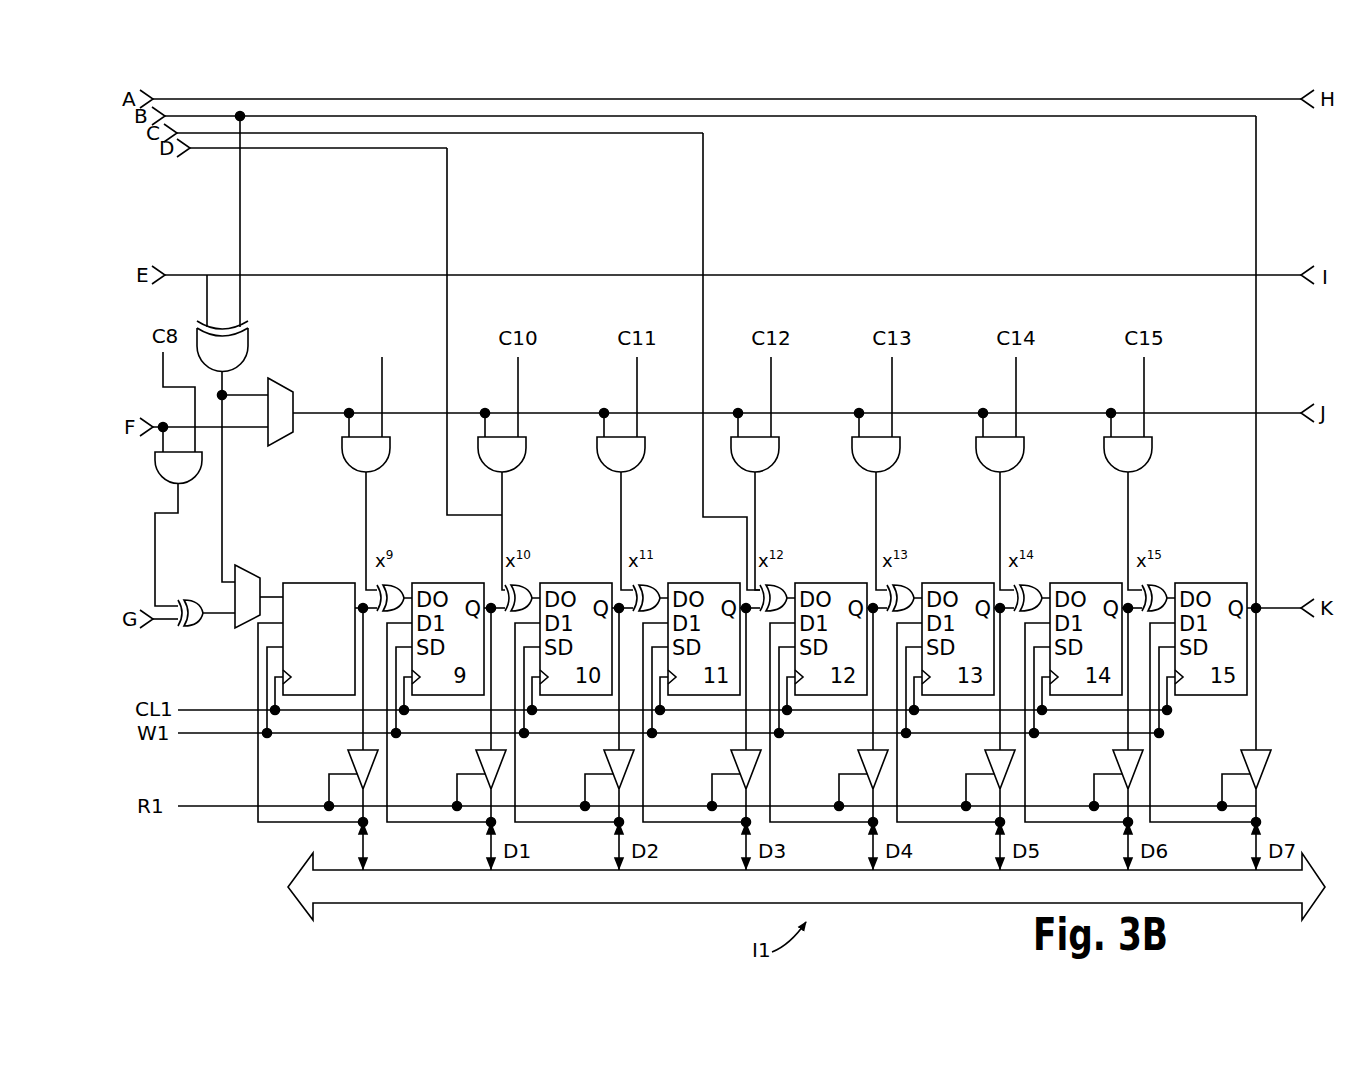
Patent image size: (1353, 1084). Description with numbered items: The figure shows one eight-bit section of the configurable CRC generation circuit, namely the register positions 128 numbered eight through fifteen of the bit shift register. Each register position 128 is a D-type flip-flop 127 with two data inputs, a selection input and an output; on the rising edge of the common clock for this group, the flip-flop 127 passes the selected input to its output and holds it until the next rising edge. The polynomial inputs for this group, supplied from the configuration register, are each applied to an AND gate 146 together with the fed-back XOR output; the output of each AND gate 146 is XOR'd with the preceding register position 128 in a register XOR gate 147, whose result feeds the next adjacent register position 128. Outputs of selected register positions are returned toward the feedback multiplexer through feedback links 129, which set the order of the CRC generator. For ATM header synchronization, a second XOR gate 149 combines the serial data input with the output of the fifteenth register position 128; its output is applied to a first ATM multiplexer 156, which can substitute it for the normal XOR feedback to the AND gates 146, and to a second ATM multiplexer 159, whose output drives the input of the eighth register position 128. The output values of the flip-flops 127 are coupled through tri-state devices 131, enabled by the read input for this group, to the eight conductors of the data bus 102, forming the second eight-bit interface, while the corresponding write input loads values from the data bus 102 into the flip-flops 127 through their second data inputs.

The feedback link 129 is at (452, 228).
The second XOR gate 149 is at (254, 348).
The first ATM multiplexer 156 is at (285, 386).
The AND gate 146 is at (341, 460).
The register position 128 is at (289, 669).
The second ATM multiplexer 159 is at (243, 563).
The D-type flip-flop 127 is at (293, 578).
The register XOR gate 147 is at (532, 572).
The tri-state device 131 is at (346, 757).
The data bus 102 is at (593, 909).